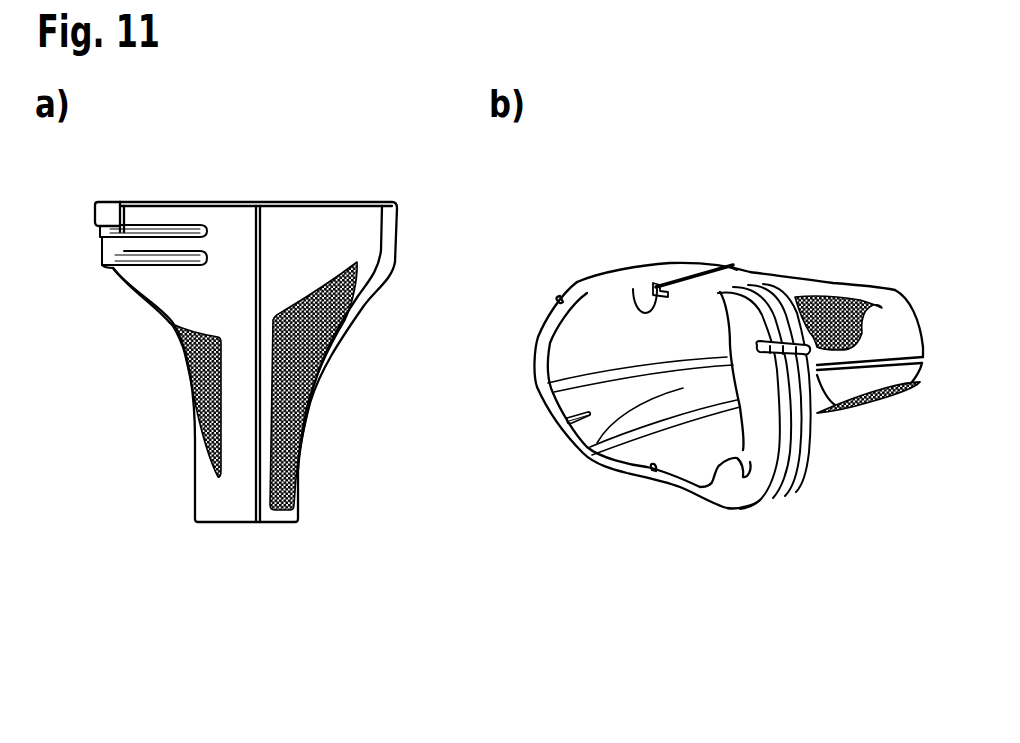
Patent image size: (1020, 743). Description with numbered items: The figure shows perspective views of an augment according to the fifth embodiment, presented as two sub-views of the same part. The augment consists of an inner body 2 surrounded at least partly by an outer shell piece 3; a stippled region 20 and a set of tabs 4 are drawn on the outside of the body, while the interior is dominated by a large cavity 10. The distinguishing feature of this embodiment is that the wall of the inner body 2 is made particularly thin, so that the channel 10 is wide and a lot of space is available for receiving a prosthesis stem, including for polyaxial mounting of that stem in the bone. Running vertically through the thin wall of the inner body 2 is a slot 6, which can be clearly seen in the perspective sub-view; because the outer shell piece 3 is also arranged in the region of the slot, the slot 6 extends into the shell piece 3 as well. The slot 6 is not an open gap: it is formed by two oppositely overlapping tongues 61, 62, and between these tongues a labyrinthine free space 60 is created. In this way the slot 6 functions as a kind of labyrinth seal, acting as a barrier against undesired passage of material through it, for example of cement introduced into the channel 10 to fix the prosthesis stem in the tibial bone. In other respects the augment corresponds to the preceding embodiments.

The inner body 2 is at (202, 495).
The outer shell piece 3 is at (108, 208).
The fastening tabs 4 is at (112, 257).
The vertical slot 6 is at (731, 267).
The cavity 10 is at (593, 443).
The sealing / filling region 20 is at (292, 406).
The labyrinthine free space 60 is at (655, 285).
The tongue 61 is at (668, 272).
The tongue 62 is at (635, 302).